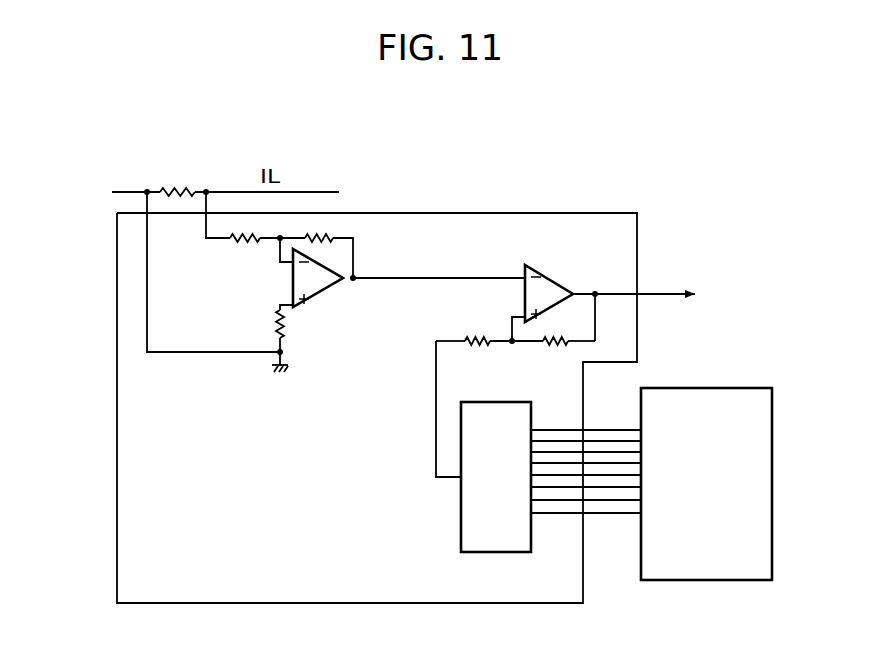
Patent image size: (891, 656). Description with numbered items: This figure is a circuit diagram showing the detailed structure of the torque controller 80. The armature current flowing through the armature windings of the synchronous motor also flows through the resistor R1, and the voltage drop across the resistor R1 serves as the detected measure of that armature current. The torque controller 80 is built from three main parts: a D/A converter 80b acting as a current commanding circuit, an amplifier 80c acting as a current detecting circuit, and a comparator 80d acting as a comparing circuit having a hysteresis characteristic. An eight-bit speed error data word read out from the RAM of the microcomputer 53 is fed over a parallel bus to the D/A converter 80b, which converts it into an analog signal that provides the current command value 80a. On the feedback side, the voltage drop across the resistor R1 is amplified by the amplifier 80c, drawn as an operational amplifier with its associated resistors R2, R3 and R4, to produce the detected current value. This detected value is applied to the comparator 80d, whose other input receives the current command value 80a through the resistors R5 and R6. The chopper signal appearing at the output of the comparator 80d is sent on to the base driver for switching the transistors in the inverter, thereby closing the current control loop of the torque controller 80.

The torque controller 80 is at (540, 213).
The current command value 80a is at (524, 484).
The D/A converter 80b is at (517, 403).
The amplifier 80c is at (271, 305).
The comparator 80d is at (618, 350).
The microcomputer 53 is at (693, 388).
The resistor R1 is at (177, 180).
The input resistor R2 is at (243, 250).
The feedback resistor R3 is at (321, 228).
The bias resistor R4 is at (294, 325).
The reference divider resistor R5 is at (476, 353).
The reference divider resistor R6 is at (555, 353).